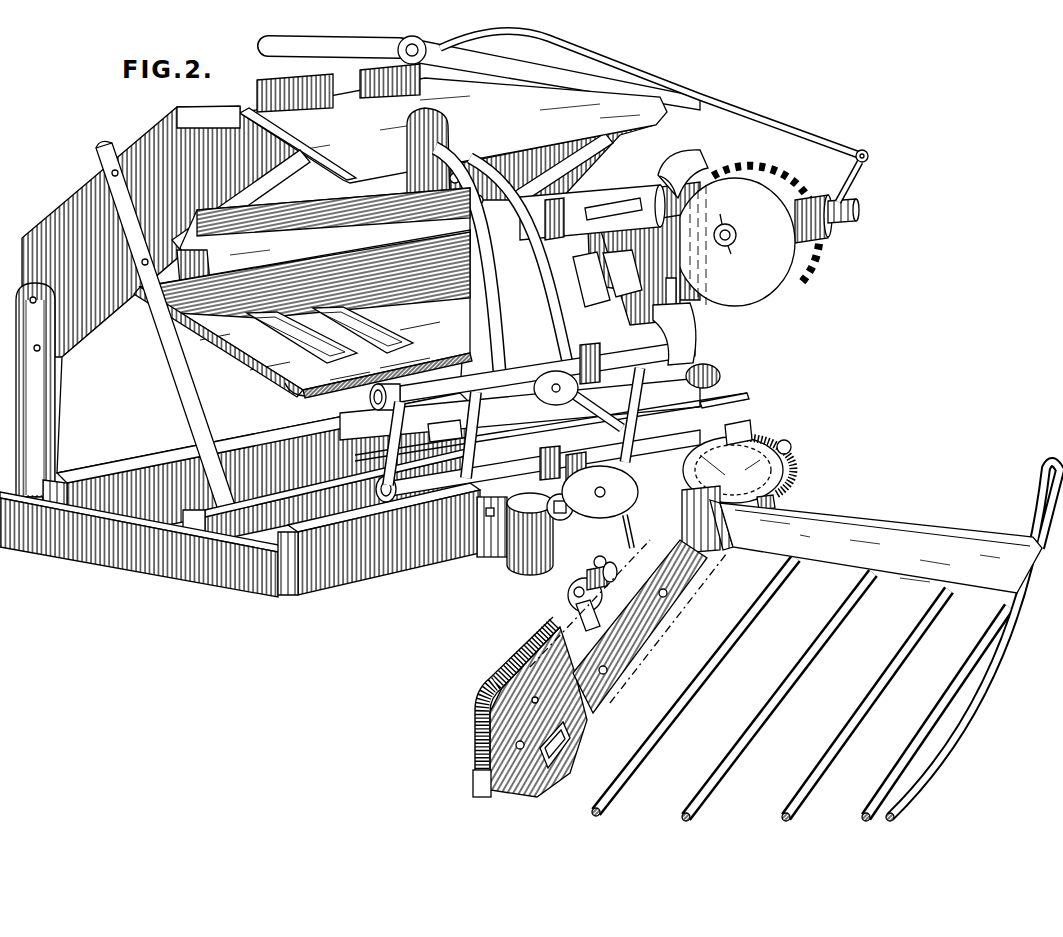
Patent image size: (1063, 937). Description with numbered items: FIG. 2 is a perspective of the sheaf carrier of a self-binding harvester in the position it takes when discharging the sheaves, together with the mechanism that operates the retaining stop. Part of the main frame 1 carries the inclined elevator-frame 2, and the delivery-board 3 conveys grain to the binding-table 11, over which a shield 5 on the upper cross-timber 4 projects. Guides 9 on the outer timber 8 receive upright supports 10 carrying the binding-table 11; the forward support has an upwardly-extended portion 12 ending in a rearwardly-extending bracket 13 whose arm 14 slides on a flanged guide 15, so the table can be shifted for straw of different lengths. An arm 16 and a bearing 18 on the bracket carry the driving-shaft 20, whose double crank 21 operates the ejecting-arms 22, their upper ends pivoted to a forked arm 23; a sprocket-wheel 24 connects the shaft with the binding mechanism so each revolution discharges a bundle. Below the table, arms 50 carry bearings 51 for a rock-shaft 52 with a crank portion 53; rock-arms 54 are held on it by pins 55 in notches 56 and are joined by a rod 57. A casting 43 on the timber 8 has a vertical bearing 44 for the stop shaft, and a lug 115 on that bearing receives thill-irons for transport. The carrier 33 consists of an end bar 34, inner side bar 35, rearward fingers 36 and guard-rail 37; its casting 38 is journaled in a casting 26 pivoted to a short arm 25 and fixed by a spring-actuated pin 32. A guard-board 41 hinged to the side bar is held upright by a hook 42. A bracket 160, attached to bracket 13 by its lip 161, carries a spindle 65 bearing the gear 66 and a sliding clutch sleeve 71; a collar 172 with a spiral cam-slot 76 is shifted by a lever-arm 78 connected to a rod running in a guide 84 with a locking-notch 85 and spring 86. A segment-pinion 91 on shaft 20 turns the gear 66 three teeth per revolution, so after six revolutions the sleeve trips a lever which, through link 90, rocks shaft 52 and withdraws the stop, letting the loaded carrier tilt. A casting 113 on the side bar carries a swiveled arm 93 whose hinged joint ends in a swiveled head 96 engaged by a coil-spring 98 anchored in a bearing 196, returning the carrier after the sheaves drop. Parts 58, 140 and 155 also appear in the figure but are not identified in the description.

The main frame 1 is at (235, 386).
The inclined elevator-frame 2 is at (588, 166).
The delivery-board 3 is at (323, 244).
The upper cross-timber 4 is at (219, 107).
The shield 5 is at (453, 130).
The outer timber 8 is at (401, 567).
The guides or ways 9 is at (736, 395).
The upright supports 10 is at (543, 421).
The binding-table 11 is at (303, 314).
The upwardly-extended portion 12 is at (626, 290).
The rearwardly-extending bracket 13 is at (592, 212).
The upwardly-projecting arm 14 is at (363, 126).
The flanged guide or way 15 is at (408, 98).
The arm 16 is at (428, 160).
The bearing 18 is at (553, 223).
The driving-shaft 20 is at (615, 212).
The double crank 21 is at (499, 308).
The ejecting-arms 22 is at (541, 329).
The forked arm 23 is at (466, 158).
The sprocket-wheel 24 is at (708, 162).
The short arm 25 is at (723, 436).
The casting 26 is at (784, 474).
The spring-actuated pin 32 is at (791, 449).
The bundle carrier and dropper 33 is at (667, 621).
The end bar 34 is at (876, 546).
The inner side bar 35 is at (640, 626).
The rearwardly-projecting fingers 36 is at (658, 745).
The raised guard-rail 37 is at (943, 757).
The casting 38 is at (776, 500).
The guard-board 41 is at (557, 734).
The hook 42 is at (500, 690).
The casting 43 is at (490, 548).
The vertical bearing 44 is at (531, 566).
The arms 50 is at (705, 378).
The bearings 51 is at (700, 359).
The rock-shaft 52 is at (450, 389).
The crank portion 53 is at (691, 342).
The rock-arms 54 is at (591, 406).
The pins 55 is at (445, 431).
The notches 56 is at (376, 399).
The rod 57 is at (440, 487).
The collar 58 is at (551, 388).
The spindle 65 is at (738, 234).
The gear 66 is at (766, 220).
The short sleeve 71 is at (822, 236).
The spiral cam-slot 76 is at (840, 200).
The lever-arm 78 is at (862, 166).
The guide 84 is at (414, 38).
The locking-notch 85 is at (556, 75).
The spring 86 is at (509, 46).
The link or rod 90 is at (678, 300).
The segment-pinion 91 is at (585, 578).
The short arm 93 is at (572, 588).
The swiveled end or head 96 is at (618, 574).
The coil-spring 98 is at (631, 545).
The casting 113 is at (592, 614).
The lug 115 is at (568, 507).
The bearing block 140 is at (669, 496).
The pin 155 is at (598, 556).
The bracket 160 is at (735, 242).
The lip or projection 161 is at (644, 241).
The collar 172 is at (846, 214).
The bearing 196 is at (600, 492).